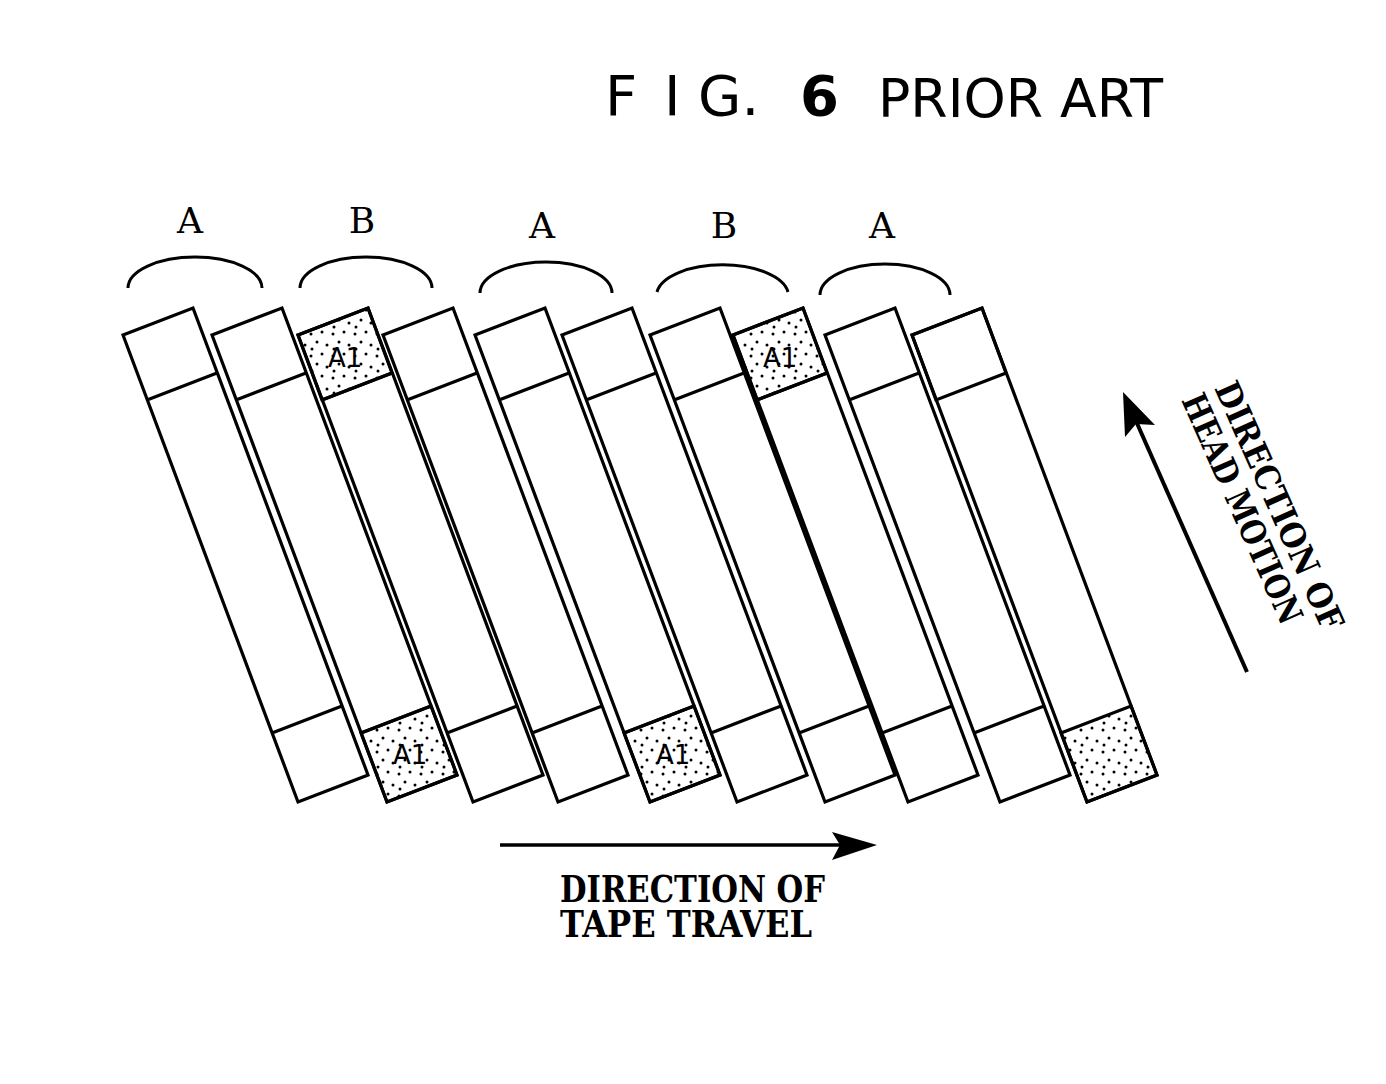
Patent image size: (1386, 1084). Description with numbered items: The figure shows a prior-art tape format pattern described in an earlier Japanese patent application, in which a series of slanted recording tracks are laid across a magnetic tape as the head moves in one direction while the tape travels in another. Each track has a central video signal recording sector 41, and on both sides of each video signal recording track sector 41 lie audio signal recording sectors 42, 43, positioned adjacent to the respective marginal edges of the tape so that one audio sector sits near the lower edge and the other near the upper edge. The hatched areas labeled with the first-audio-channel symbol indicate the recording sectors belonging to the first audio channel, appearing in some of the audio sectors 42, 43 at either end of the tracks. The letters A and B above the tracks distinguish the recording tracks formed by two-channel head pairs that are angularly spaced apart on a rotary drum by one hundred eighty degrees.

The video signal recording sector 41 is at (1079, 521).
The audio signal recording sector 42 is at (1130, 758).
The audio signal recording sector 43 is at (965, 347).